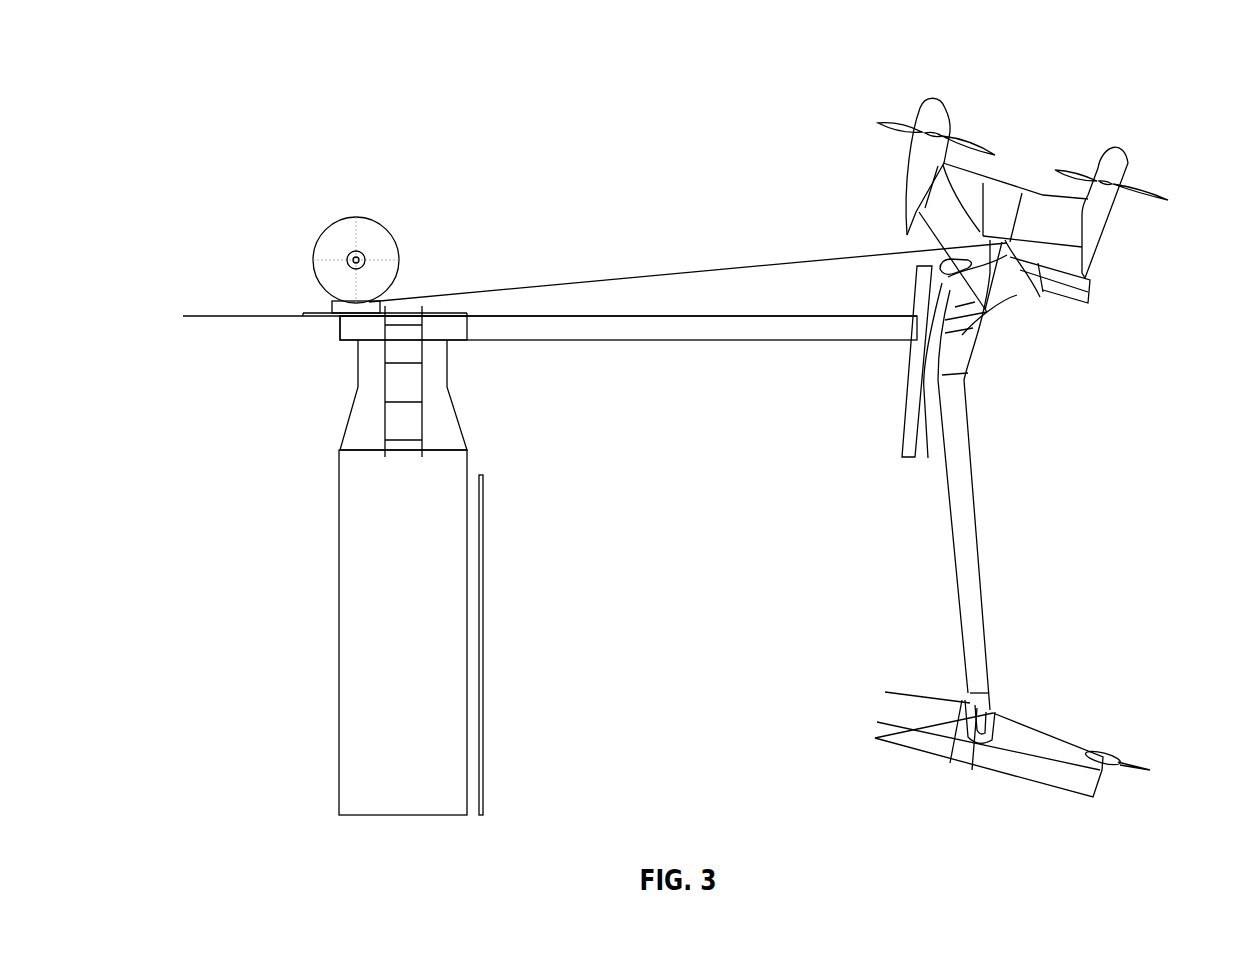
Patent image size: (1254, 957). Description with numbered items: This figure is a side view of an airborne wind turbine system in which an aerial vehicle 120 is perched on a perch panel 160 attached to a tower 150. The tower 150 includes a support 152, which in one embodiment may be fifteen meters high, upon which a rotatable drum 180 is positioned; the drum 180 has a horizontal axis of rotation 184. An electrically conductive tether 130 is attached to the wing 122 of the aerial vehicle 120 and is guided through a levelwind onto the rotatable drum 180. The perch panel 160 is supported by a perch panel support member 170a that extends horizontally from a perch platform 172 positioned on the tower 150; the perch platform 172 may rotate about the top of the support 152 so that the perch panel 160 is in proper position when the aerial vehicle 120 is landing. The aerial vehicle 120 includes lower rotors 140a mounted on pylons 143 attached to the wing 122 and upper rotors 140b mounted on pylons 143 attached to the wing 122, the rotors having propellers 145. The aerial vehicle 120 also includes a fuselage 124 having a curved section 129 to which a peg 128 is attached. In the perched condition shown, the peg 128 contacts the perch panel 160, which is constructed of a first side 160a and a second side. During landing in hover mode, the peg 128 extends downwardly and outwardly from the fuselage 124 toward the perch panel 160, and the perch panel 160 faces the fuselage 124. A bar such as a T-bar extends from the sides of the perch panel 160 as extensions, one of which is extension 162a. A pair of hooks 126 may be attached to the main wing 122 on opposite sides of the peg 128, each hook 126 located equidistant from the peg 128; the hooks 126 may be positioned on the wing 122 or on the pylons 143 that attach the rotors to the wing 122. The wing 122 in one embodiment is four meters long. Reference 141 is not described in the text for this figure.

The aerial vehicle 120 is at (1041, 415).
The wing 122 is at (1090, 283).
The fuselage 124 is at (970, 487).
The hooks 126 is at (1017, 295).
The peg 128 is at (928, 458).
The curved section 129 is at (965, 338).
The tether 130 is at (765, 267).
The lower rotors 140a is at (940, 117).
The upper rotors 140b is at (1122, 163).
The wing 141 is at (1047, 228).
The pylons 143 is at (953, 198).
The propellers 145 is at (894, 125).
The tower 150 is at (550, 475).
The support 152 is at (377, 637).
The perch panel 160 is at (867, 356).
The first side 160a is at (910, 416).
The extension 162a is at (940, 275).
The perch panel support member 170a is at (712, 331).
The perch platform 172 is at (340, 331).
The rotatable drum 180 is at (397, 238).
The axis 184 is at (358, 257).